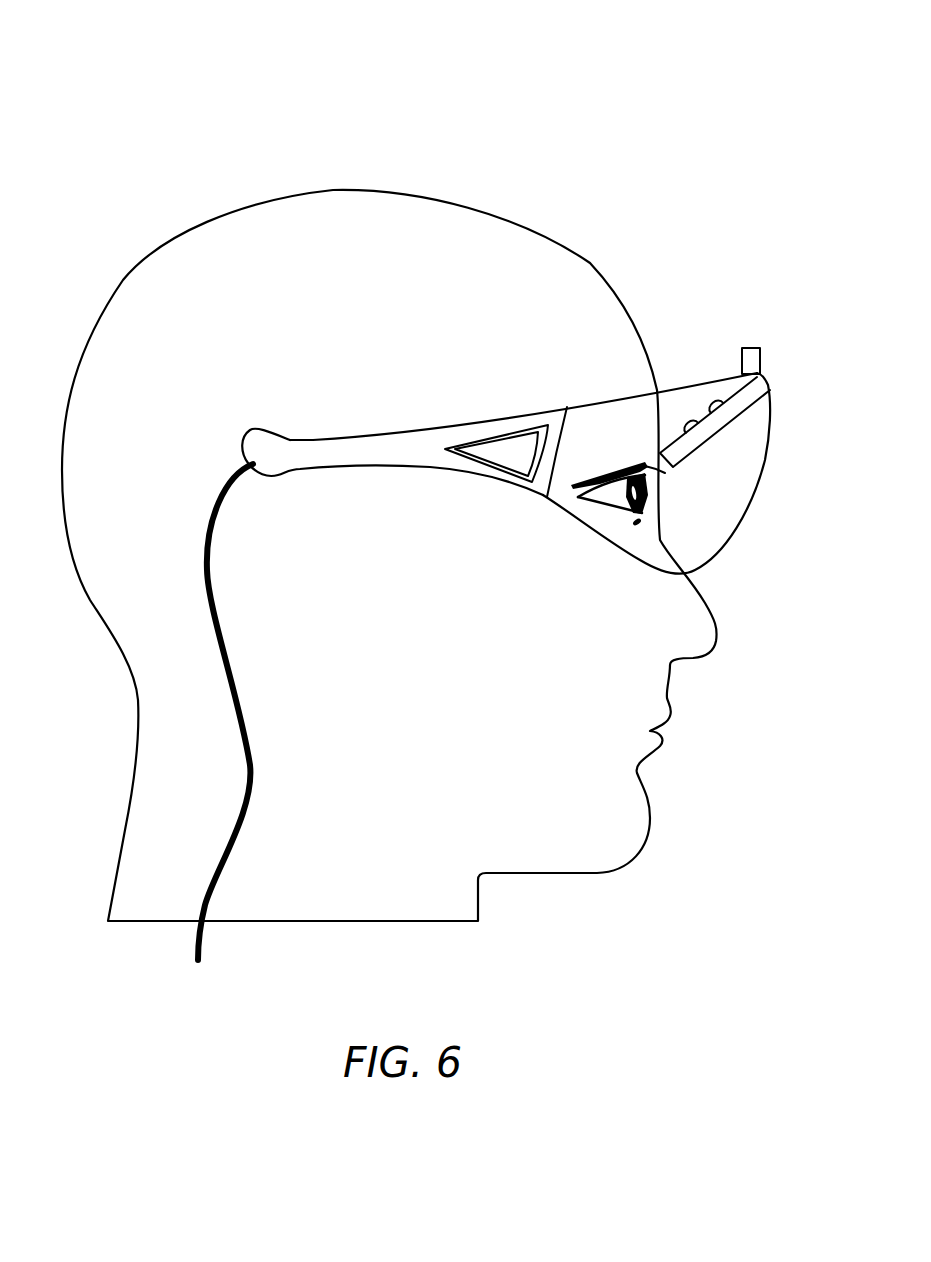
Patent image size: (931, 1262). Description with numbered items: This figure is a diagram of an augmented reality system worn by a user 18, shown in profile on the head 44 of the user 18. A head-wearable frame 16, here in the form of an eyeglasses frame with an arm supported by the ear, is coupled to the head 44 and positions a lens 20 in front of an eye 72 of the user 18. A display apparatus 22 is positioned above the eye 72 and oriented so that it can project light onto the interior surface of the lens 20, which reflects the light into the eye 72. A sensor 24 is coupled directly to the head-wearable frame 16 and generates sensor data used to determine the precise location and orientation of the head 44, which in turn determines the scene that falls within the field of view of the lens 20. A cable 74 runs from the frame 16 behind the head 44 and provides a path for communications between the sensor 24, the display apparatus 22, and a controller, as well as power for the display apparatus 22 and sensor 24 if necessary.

The user 18 is at (452, 319).
The head 44 is at (92, 331).
The head-wearable frame 16 is at (333, 468).
The lens 20 is at (683, 439).
The display apparatus 22 is at (715, 402).
The sensor 24 is at (760, 349).
The eye 72 is at (608, 513).
The cable 74 is at (240, 696).